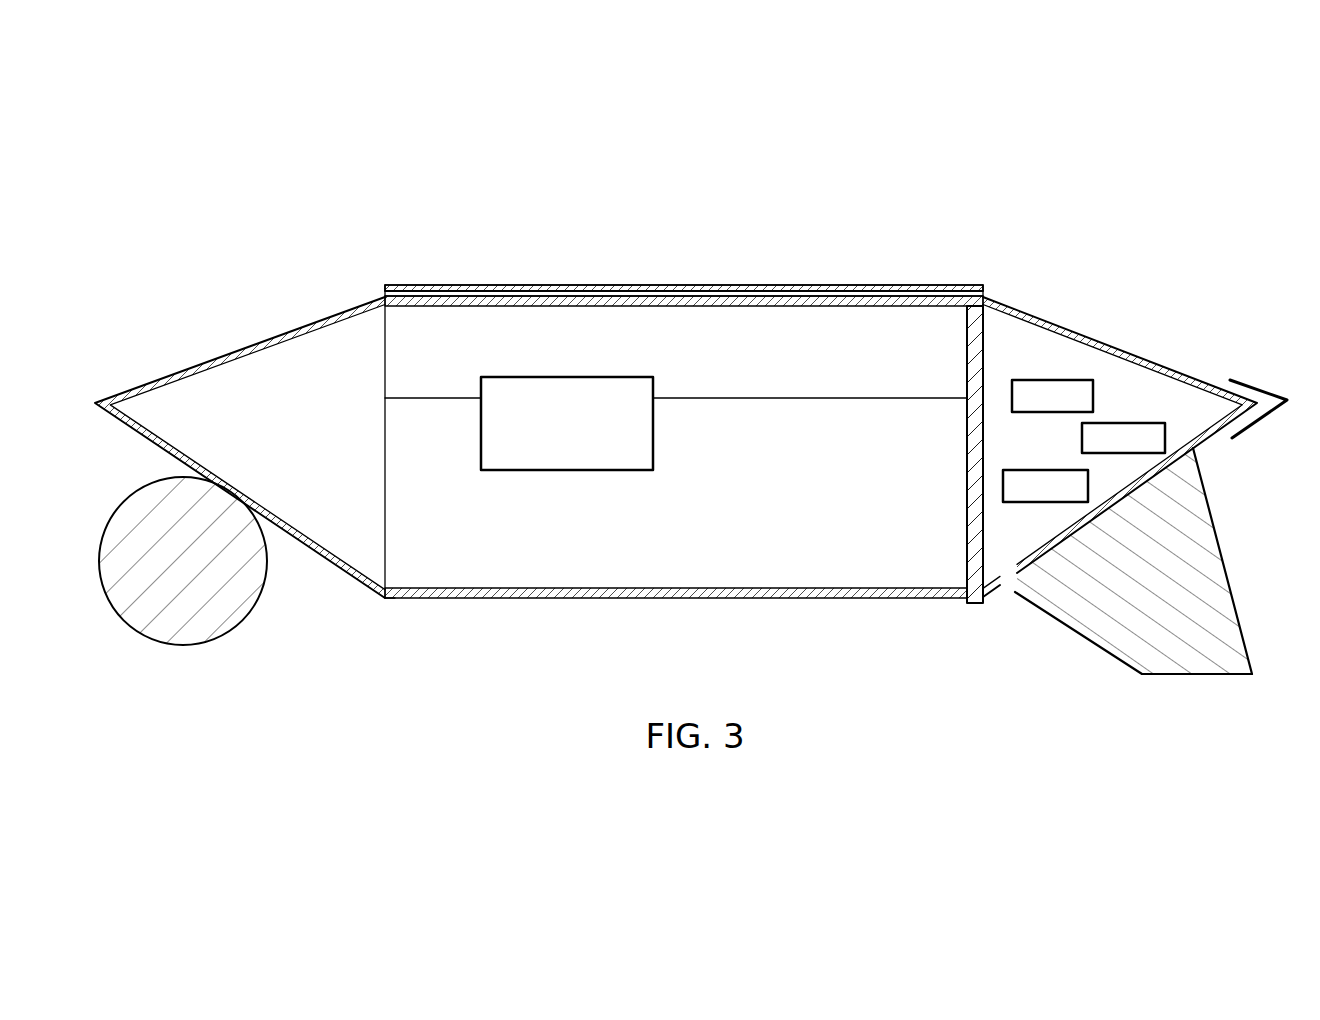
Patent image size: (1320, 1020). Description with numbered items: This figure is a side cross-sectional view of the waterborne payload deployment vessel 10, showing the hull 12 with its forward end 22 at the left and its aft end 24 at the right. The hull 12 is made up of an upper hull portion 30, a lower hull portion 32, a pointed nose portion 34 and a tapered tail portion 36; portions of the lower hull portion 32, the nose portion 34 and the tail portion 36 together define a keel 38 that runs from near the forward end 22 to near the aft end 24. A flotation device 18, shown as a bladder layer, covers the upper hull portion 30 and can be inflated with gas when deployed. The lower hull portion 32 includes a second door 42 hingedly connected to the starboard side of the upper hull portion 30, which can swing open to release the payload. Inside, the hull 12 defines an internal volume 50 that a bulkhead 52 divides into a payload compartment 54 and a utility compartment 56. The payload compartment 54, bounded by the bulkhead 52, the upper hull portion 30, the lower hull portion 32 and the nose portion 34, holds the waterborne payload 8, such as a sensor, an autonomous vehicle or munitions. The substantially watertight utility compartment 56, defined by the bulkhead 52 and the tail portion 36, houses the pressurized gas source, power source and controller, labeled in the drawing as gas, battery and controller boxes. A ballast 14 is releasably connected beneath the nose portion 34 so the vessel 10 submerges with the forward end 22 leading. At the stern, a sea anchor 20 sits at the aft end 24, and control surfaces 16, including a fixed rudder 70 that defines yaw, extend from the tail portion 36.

The waterborne payload deployment vessel 10 is at (688, 410).
The hull 12 is at (868, 304).
The flotation device 18 is at (591, 285).
The upper hull portion 30 is at (452, 318).
The lower hull portion 32 is at (549, 598).
The internal volume 50 is at (676, 318).
The waterborne payload 8 is at (608, 377).
The bulkhead 52 is at (969, 498).
The second door 42 is at (808, 597).
The payload compartment 54 is at (872, 593).
The keel 38 is at (351, 645).
The forward end 22 is at (229, 434).
The nose portion 34 is at (196, 362).
The ballast 14 is at (182, 646).
The aft end 24 is at (1142, 467).
The tail portion 36 is at (1118, 346).
The utility compartment 56 is at (1005, 588).
The sea anchor 20 is at (1254, 388).
The control surfaces 16 is at (1153, 561).
The rudder 70 is at (1193, 675).